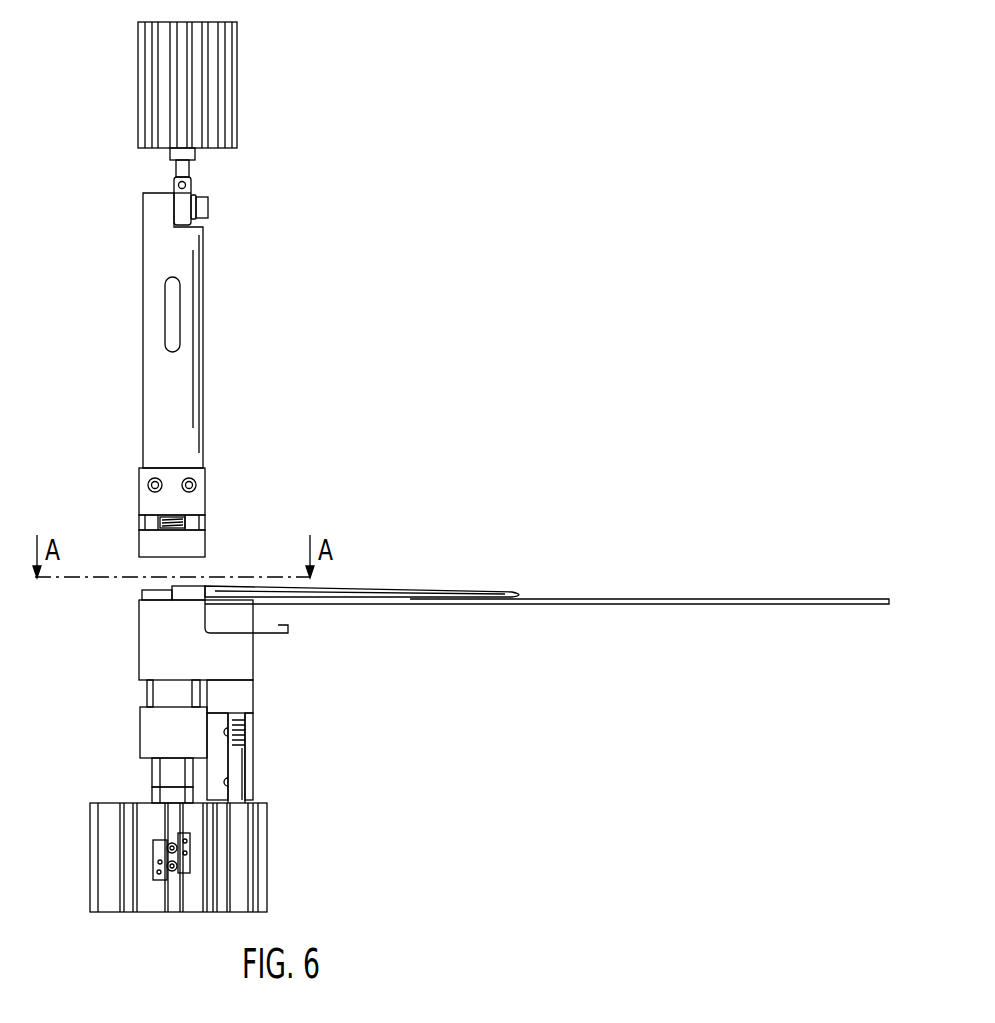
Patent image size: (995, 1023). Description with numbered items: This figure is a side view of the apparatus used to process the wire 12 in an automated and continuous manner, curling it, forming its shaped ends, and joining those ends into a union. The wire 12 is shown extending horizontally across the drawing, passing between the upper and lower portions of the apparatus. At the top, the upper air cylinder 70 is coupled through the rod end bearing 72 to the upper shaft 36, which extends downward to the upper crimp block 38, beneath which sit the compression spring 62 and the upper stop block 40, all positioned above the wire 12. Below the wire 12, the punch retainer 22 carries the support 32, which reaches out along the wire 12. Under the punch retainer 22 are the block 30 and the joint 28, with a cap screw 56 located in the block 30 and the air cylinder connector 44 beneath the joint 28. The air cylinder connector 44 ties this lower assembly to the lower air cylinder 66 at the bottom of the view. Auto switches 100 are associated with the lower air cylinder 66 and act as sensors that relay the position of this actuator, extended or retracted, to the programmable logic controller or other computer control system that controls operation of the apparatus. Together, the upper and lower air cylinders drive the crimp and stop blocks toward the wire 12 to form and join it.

The wire 12 is at (545, 599).
The punch retainer 22 is at (140, 637).
The joint 28 is at (140, 752).
The block 30 is at (253, 703).
The support 32 is at (247, 605).
The upper shaft 36 is at (203, 272).
The upper crimp block 38 is at (197, 497).
The upper stop block 40 is at (195, 545).
The air cylinder connector 44 is at (152, 778).
The cap screw 56 is at (237, 782).
The compression spring 62 is at (185, 521).
The lower air cylinder 66 is at (267, 845).
The upper air cylinder 70 is at (237, 75).
The rod end bearing 72 is at (195, 163).
The auto switches 100 is at (157, 853).